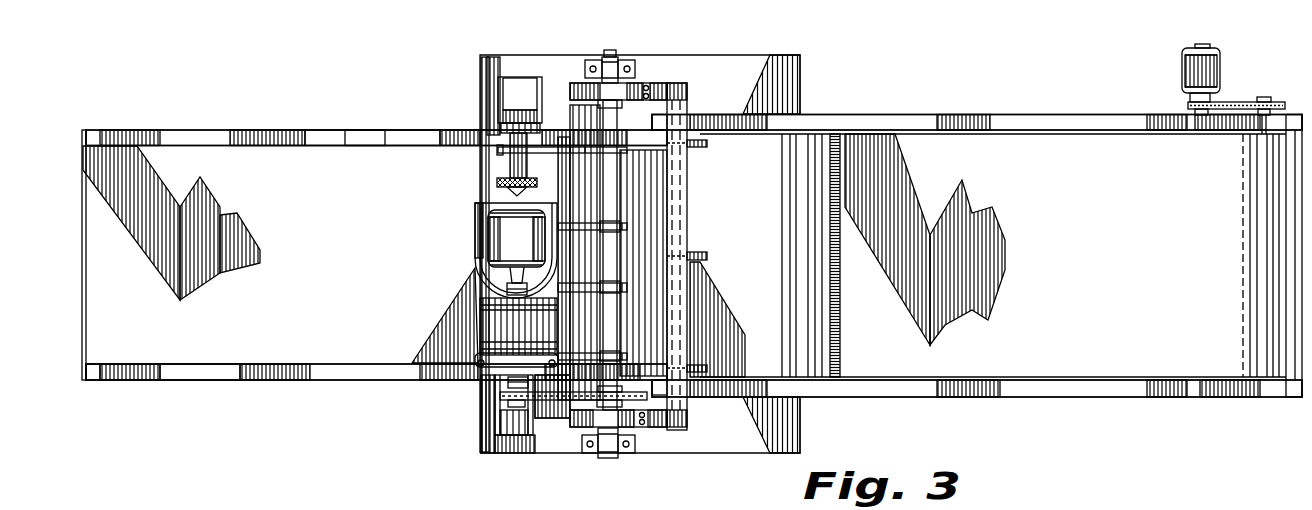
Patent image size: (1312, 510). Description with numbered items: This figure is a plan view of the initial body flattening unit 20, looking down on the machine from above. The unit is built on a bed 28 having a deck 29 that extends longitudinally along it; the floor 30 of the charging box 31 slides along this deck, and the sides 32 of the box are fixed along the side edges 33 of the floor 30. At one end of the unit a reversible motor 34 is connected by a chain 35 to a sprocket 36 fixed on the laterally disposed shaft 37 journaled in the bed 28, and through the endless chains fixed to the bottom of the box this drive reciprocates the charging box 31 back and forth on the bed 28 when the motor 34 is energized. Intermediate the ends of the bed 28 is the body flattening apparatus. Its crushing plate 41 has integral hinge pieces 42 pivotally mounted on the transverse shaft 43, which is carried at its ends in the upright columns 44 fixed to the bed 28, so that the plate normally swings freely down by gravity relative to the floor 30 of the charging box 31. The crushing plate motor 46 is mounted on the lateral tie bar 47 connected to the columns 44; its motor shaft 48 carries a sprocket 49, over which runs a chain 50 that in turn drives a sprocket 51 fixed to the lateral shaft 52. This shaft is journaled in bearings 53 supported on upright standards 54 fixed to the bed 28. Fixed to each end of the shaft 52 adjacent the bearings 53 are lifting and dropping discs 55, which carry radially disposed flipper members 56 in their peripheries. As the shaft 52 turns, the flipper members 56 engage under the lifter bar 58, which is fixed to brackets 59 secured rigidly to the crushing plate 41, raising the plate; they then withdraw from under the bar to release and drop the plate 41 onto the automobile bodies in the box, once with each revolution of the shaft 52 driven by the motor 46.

The apparatus 20 is at (390, 127).
The bed 28 is at (294, 366).
The deck 29 is at (1295, 398).
The floor 30 is at (120, 152).
The charging box 31 is at (210, 152).
The sides 32 is at (303, 147).
The side edges 33 is at (282, 141).
The reversible motor 34 is at (1180, 70).
The chain 35 is at (1236, 102).
The sprocket 36 is at (1269, 104).
The laterally disposed shaft 37 is at (1264, 97).
The crushing plate 41 is at (823, 131).
The hinge pieces 42 is at (496, 150).
The transverse shaft 43 is at (508, 135).
The upright columns 44 is at (498, 80).
The crushing plate motor 46 is at (480, 230).
The lateral tie bar 47 is at (503, 112).
The motor shaft 48 is at (498, 381).
The sprocket 49 is at (500, 401).
The chain 50 is at (550, 410).
The sprocket 51 is at (625, 388).
The lateral shaft 52 is at (618, 331).
The bearings 53 is at (618, 56).
The upright standards 54 is at (588, 61).
The lifting and dropping discs 55 is at (573, 84).
The flipper members 56 is at (665, 82).
The lifter bar 58 is at (688, 201).
The brackets 59 is at (701, 148).